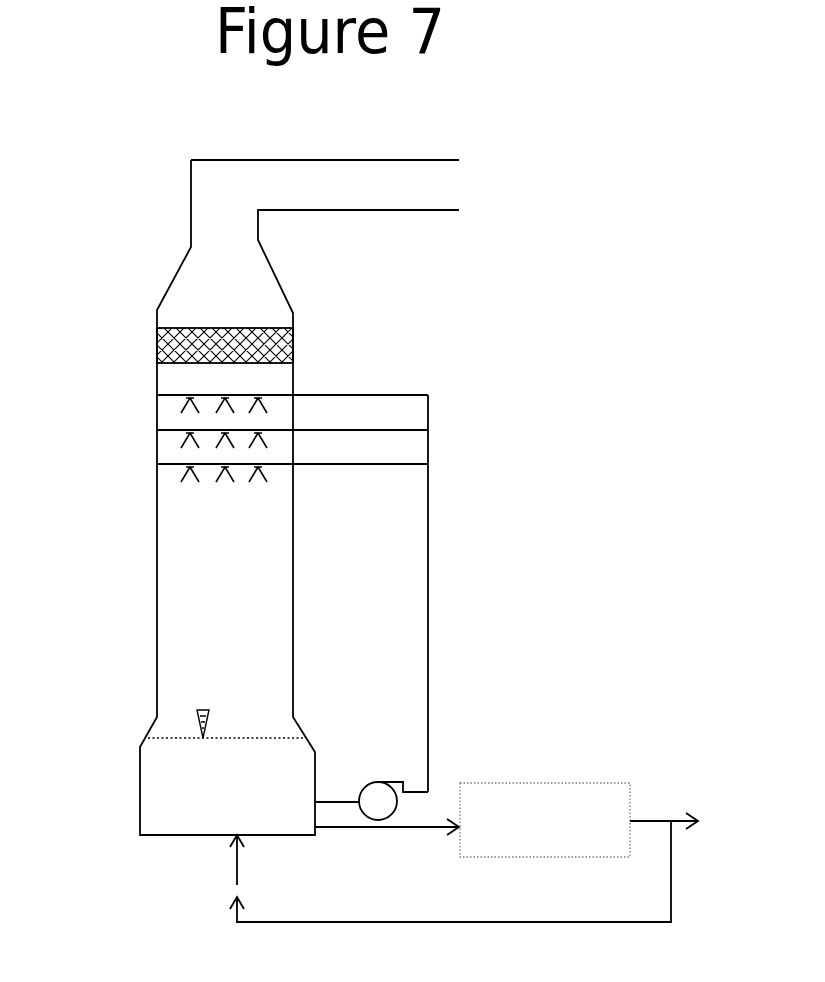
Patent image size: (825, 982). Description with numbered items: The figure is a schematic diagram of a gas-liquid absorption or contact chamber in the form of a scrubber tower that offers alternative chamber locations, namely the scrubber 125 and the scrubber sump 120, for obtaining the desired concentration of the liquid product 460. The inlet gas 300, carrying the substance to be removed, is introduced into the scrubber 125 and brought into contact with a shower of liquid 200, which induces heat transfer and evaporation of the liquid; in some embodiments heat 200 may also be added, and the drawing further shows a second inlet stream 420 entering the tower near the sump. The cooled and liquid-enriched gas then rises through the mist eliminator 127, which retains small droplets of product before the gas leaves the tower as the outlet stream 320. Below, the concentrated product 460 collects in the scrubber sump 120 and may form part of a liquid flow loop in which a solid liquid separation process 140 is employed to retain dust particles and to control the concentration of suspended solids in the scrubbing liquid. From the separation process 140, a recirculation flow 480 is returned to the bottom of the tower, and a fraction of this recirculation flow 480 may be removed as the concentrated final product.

The scrubber sump 120 is at (227, 758).
The scrubber 125 is at (292, 593).
The mist eliminator 127 is at (293, 345).
The solid liquid separation process 140 is at (545, 820).
The shower of liquid 200 is at (128, 826).
The inlet gas 300 is at (145, 614).
The treated gas outlet 320 is at (435, 182).
The inlet stream 420 is at (128, 766).
The concentrated product 460 is at (387, 842).
The recirculation flow 480 is at (494, 867).